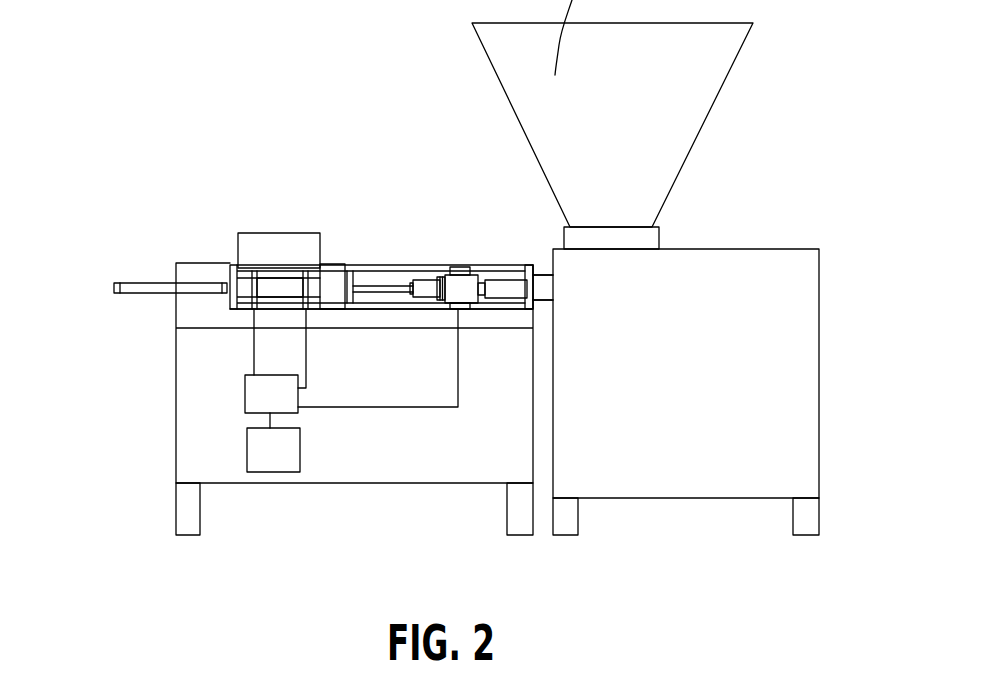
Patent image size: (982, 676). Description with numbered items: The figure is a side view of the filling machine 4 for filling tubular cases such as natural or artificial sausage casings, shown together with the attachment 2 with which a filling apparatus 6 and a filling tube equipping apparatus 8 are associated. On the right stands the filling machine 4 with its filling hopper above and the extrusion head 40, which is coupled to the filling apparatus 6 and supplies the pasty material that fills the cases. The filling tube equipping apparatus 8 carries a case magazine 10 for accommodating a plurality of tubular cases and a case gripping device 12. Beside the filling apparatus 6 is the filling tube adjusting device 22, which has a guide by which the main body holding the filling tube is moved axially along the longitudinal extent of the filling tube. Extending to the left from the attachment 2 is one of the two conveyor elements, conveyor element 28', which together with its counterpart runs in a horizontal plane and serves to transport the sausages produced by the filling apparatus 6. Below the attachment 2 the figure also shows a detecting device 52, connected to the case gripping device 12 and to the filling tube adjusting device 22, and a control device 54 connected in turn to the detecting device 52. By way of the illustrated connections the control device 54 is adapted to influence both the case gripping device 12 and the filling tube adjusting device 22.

The attachment 2 is at (178, 98).
The filling machine 4 is at (788, 188).
The filling apparatus 6 is at (395, 272).
The filling tube equipping apparatus 8 is at (345, 238).
The case magazine 10 is at (286, 257).
The case gripping device 12 is at (268, 283).
The filling tube adjusting device 22 is at (463, 249).
The conveyor element 28' is at (170, 241).
The extrusion head 40 is at (538, 285).
The detecting device 52 is at (245, 402).
The control device 54 is at (288, 457).